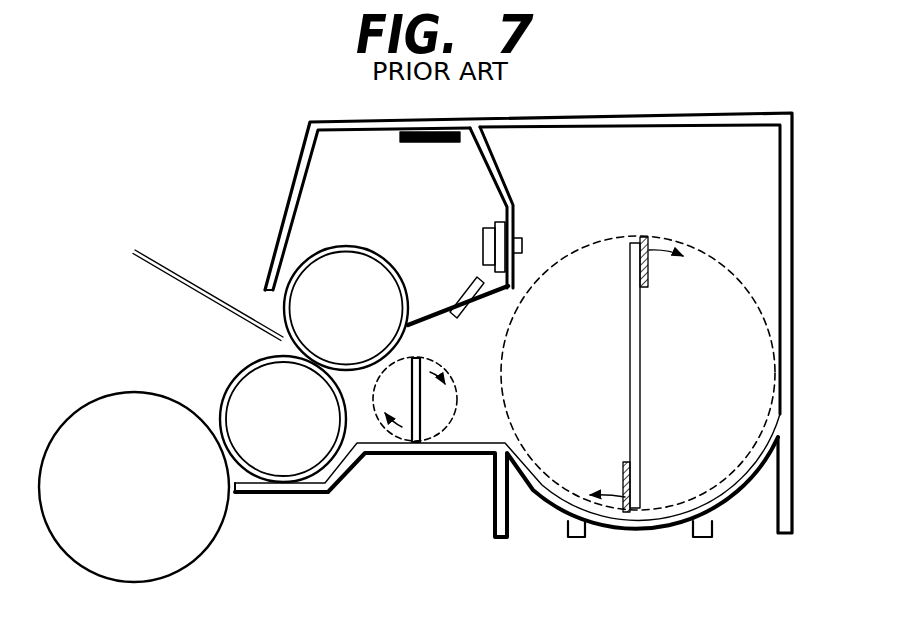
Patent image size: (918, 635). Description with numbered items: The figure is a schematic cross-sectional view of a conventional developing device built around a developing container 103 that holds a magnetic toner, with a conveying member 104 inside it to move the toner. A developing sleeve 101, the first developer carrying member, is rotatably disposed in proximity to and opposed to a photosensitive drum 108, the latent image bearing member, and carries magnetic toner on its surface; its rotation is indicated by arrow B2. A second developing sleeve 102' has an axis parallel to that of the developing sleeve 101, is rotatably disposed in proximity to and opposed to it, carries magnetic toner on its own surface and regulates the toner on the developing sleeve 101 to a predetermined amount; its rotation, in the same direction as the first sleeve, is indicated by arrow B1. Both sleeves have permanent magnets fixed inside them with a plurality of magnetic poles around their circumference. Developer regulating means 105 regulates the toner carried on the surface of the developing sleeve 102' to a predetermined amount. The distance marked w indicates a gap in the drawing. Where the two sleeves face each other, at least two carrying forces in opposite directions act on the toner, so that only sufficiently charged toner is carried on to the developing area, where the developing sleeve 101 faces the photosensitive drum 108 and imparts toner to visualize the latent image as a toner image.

The developing sleeve 101 is at (335, 463).
The developing sleeve 102' is at (349, 285).
The developing container 103 is at (723, 114).
The conveying member 104 is at (417, 410).
The developer regulating means 105 is at (456, 288).
The photosensitive drum 108 is at (108, 393).
The gap width w is at (130, 268).
The rotation direction of second sleeve B1 is at (362, 232).
The rotation direction of first sleeve B2 is at (253, 348).